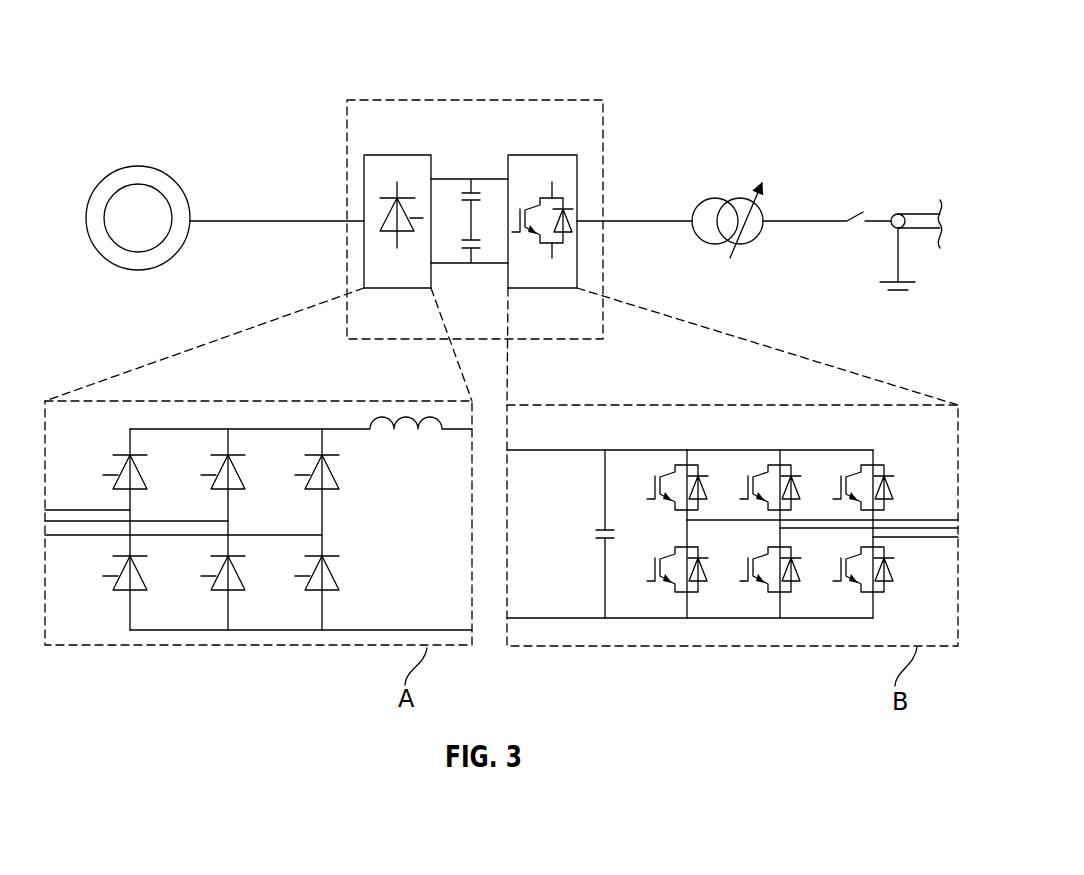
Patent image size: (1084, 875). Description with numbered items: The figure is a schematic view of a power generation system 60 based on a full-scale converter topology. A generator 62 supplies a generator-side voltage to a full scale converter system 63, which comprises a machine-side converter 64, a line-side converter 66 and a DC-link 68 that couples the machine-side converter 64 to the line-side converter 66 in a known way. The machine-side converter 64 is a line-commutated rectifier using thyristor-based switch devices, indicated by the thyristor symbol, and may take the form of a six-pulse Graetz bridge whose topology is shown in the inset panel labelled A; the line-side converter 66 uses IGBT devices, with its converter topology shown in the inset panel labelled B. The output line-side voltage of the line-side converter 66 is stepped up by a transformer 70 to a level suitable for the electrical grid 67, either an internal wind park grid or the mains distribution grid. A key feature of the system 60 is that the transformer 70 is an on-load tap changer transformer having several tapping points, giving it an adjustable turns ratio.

The power generation system 60 is at (828, 40).
The generator 62 is at (122, 171).
The full scale converter system 63 is at (345, 247).
The machine-side converter 64 is at (390, 150).
The line-side converter 66 is at (542, 150).
The distribution grid 67 is at (921, 211).
The DC-link 68 is at (470, 150).
The transformer 70 is at (746, 252).